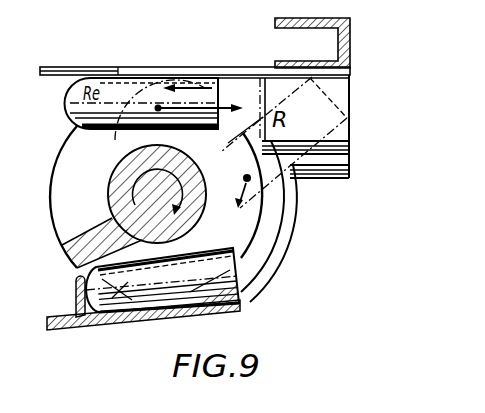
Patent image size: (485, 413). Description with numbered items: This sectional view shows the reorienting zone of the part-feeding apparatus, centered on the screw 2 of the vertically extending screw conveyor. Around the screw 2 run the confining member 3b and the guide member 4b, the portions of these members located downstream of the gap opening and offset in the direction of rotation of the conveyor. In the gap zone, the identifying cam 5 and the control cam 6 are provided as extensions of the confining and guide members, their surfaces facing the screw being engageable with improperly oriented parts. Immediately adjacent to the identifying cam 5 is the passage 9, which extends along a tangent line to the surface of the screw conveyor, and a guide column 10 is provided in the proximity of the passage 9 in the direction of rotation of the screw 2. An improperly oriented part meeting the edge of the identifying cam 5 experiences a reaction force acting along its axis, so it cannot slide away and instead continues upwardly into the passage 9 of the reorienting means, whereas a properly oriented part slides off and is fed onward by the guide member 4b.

The screw 2 is at (60, 155).
The confining member 3b is at (265, 280).
The guide member 4b is at (75, 290).
The identifying cam 5 is at (230, 78).
The control cam 6 is at (82, 67).
The passage 9 is at (338, 88).
The guide column 10 is at (340, 172).